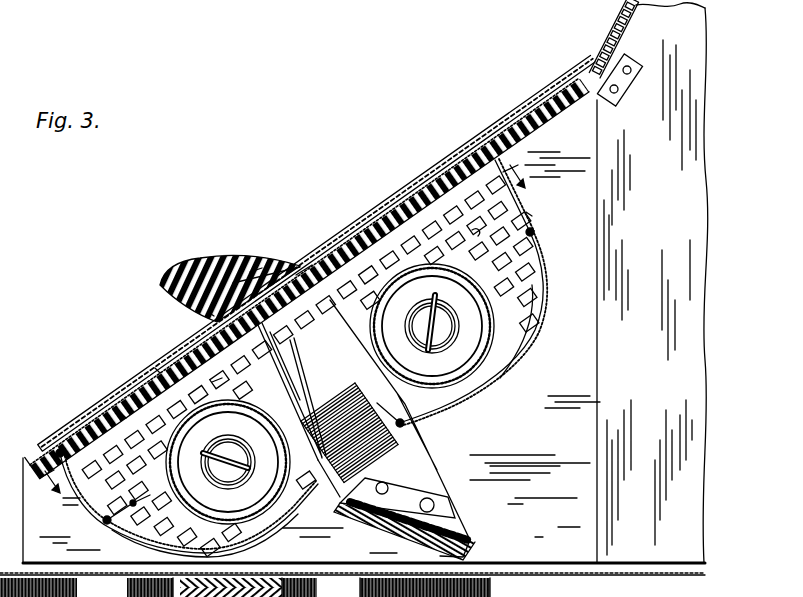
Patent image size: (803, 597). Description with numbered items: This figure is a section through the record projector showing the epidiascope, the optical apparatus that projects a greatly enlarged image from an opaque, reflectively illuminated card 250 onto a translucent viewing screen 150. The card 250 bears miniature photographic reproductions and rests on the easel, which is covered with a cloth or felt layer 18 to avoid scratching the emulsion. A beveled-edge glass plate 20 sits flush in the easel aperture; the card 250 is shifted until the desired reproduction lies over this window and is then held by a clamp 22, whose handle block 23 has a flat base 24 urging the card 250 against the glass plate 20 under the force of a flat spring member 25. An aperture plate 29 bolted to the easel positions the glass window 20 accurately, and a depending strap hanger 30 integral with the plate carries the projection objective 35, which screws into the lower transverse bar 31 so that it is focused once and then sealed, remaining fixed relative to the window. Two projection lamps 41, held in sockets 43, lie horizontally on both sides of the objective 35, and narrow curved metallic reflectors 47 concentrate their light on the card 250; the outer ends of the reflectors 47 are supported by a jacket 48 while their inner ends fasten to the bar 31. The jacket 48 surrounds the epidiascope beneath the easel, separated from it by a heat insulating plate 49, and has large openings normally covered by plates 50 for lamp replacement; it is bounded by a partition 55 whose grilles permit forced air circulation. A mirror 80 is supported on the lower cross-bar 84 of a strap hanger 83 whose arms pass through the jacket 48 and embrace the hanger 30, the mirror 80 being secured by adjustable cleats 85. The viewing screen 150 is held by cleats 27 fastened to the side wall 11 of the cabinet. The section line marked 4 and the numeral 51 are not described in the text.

The section line 4 is at (287, 339).
The left side wall 11 is at (652, 283).
The cloth or felt layer 18 is at (52, 452).
The glass plate 20 is at (301, 272).
The clamp 22 is at (250, 272).
The handle block 23 is at (178, 284).
The flat base 24 is at (208, 314).
The flat spring member 25 is at (416, 178).
The cleats 27 is at (632, 88).
The aperture plate 29 is at (212, 382).
The strap hanger 30 is at (345, 398).
The lower transverse bar 31 is at (440, 418).
The projection lens or objective 35 is at (330, 372).
The projection lamps 41 is at (330, 394).
The sockets 43 is at (352, 580).
The metallic reflectors 47 is at (152, 548).
The jacket 48 is at (532, 216).
The heat insulating plate 49 is at (112, 410).
The plates 50 is at (272, 540).
The lug 51 is at (480, 230).
The partition 55 is at (540, 588).
The mirror 80 is at (463, 512).
The strap hanger 83 is at (437, 493).
The lower cross-bar 84 is at (470, 557).
The adjustable cleats 85 is at (397, 498).
The translucent viewing screen 150 is at (638, 39).
The recordex cards 250 is at (153, 366).